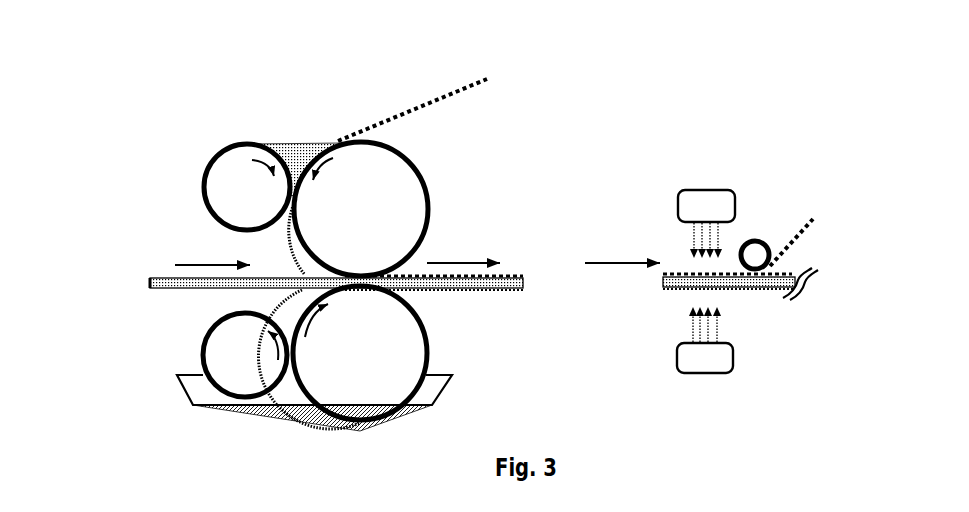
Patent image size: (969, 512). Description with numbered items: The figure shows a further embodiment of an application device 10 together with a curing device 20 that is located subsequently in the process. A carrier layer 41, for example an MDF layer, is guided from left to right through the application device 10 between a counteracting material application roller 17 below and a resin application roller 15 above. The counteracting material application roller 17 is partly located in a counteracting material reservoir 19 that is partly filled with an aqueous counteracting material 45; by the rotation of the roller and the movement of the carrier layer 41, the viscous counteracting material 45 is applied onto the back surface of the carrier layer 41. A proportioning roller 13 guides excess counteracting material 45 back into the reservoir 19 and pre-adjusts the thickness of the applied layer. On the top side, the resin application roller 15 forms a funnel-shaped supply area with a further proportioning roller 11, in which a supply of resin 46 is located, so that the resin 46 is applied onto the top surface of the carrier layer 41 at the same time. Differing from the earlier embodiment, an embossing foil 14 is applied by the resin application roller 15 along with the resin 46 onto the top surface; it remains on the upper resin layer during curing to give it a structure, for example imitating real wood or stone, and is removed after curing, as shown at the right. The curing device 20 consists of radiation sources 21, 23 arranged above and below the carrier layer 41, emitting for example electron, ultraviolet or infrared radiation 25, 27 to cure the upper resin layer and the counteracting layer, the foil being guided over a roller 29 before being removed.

The application device 10 is at (110, 141).
The proportioning roller 11 is at (223, 172).
The proportioning roller 13 is at (218, 338).
The embossing foil 14 is at (447, 96).
The resin application roller 15 is at (408, 197).
The counteracting material application roller 17 is at (410, 352).
The counteracting material reservoir 19 is at (188, 378).
The curing device 20 is at (689, 140).
The radiation source 21 is at (689, 205).
The radiation source 23 is at (681, 348).
The treatment radiation (upper) 25 is at (698, 233).
The treatment radiation (lower) 27 is at (713, 323).
The guide roller 29 is at (757, 240).
The carrier layer 41 is at (153, 277).
The counteracting material 45 is at (282, 417).
The resin 46 is at (294, 158).